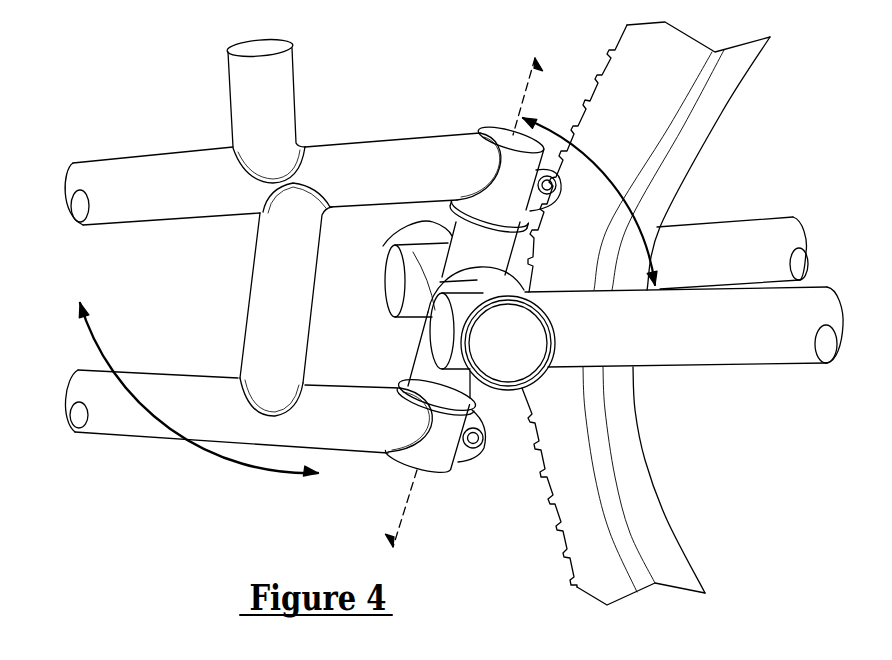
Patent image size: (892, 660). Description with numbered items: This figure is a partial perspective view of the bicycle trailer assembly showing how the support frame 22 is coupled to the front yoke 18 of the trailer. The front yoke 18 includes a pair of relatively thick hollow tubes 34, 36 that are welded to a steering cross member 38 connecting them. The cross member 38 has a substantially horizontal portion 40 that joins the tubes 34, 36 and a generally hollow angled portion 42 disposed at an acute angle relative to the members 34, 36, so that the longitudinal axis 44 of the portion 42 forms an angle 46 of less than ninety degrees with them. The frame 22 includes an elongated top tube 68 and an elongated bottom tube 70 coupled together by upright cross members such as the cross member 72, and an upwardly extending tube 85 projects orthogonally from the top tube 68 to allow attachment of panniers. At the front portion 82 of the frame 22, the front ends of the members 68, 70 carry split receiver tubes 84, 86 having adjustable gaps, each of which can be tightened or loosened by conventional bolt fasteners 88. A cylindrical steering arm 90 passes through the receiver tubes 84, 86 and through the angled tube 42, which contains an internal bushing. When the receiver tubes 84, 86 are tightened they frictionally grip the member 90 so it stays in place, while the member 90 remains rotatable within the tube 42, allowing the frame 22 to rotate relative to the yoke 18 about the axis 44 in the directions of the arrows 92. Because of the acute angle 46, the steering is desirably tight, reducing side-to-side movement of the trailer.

The front yoke 18 is at (772, 360).
The frame 22 is at (362, 143).
The tube 34 is at (707, 370).
The tube 36 is at (735, 220).
The steering cross member 38 is at (400, 233).
The horizontal portion 40 is at (427, 312).
The angled portion 42 is at (470, 392).
The longitudinal axis 44 is at (527, 92).
The angle 46 is at (605, 175).
The top tube 68 is at (150, 193).
The bottom tube 70 is at (118, 423).
The upright cross member 72 is at (272, 305).
The front portion 82 is at (483, 130).
The split receiver tube 84 is at (558, 184).
The upwardly extending tube 85 is at (243, 88).
The split receiver tube 86 is at (435, 472).
The bolt fastener 88 is at (558, 205).
The steering arm 90 is at (513, 137).
The arrows 92 is at (97, 348).